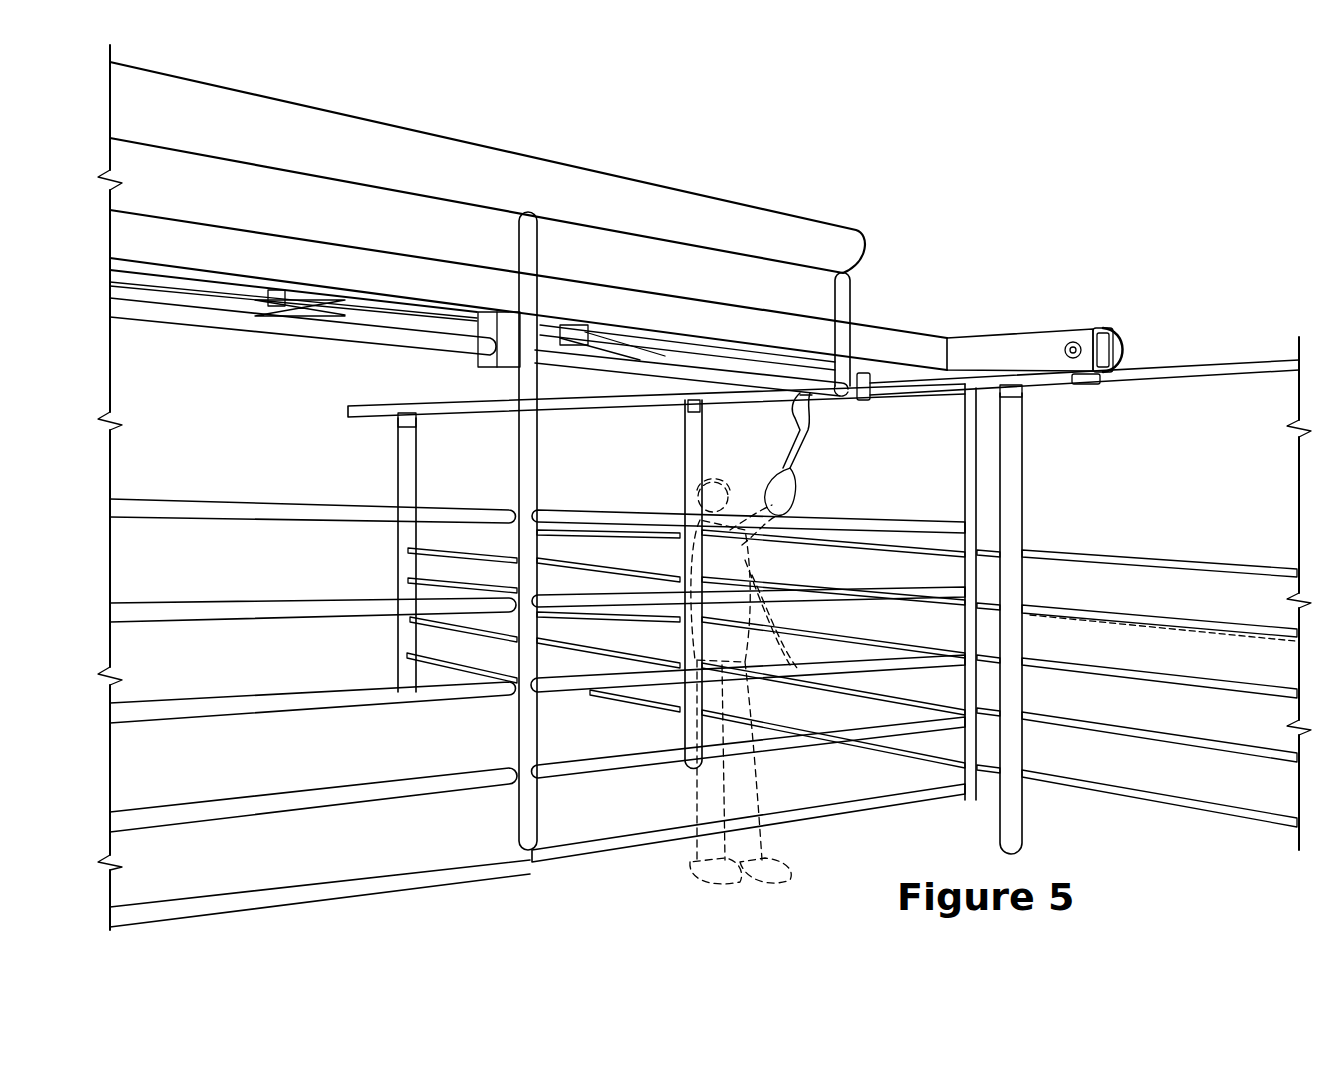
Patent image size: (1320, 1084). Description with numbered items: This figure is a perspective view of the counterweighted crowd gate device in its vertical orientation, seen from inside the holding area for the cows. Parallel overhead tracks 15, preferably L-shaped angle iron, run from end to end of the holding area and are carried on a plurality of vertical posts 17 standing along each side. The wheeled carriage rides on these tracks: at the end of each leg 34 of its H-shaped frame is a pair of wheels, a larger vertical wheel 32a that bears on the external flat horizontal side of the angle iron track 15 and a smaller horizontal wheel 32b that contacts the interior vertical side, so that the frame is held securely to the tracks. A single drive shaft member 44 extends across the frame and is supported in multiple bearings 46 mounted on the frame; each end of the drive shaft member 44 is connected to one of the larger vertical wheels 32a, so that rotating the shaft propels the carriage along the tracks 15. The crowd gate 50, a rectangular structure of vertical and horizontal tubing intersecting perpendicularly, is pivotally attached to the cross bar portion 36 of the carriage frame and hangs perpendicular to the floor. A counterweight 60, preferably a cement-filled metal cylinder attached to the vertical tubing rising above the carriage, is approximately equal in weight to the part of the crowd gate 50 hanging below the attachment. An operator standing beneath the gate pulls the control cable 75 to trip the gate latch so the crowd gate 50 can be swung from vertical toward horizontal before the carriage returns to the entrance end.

The parallel overhead tracks 15 is at (1278, 366).
The vertical posts 17 is at (405, 479).
The larger vertical wheel 32a is at (1120, 336).
The smaller horizontal wheel 32b is at (1092, 384).
The leg 34 is at (1025, 352).
The cross bar portion 36 is at (711, 322).
The drive shaft member 44 is at (218, 296).
The bearings 46 is at (272, 297).
The crowd gate 50 is at (527, 491).
The counterweight 60 is at (762, 242).
The control cable 75 is at (795, 490).